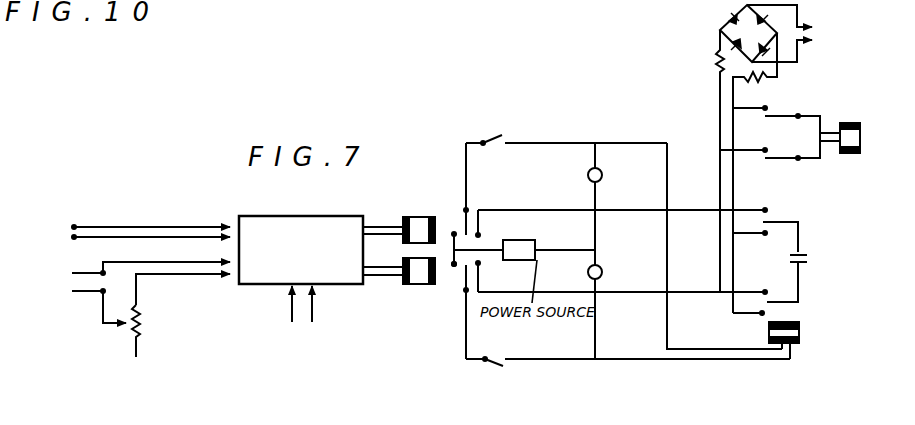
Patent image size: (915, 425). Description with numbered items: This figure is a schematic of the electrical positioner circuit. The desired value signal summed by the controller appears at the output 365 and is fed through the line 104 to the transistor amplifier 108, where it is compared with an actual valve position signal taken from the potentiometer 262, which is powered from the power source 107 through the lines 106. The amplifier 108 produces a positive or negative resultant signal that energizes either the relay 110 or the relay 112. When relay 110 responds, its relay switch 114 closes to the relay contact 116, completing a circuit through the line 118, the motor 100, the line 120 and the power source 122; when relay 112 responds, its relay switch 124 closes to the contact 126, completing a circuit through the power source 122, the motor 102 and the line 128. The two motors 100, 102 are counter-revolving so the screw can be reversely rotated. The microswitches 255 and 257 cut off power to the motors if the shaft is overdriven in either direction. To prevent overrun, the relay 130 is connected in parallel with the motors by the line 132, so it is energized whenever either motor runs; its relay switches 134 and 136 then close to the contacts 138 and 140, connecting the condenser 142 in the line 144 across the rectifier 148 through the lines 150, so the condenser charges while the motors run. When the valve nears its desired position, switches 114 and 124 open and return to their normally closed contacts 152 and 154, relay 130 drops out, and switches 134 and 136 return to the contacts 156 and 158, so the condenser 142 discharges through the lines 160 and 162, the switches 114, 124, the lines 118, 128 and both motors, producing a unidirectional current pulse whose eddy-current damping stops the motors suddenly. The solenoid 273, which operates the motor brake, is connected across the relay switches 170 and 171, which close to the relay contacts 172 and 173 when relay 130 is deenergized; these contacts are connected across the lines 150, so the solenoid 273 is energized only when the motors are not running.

The output 365 is at (75, 224).
The line 104 is at (137, 225).
The power source 107 is at (70, 283).
The lines 106 is at (168, 277).
The potentiometer 262 is at (145, 311).
The transistor amplifier 108 is at (287, 228).
The relay 110 is at (420, 225).
The relay 112 is at (423, 276).
The relay contact 116 is at (452, 229).
The relay switch 114 is at (468, 209).
The microswitch 255 is at (498, 134).
The line 118 is at (562, 143).
The line 132 is at (651, 143).
The motor 100 is at (588, 172).
The line 160 is at (623, 209).
The contact 152 is at (482, 233).
The power source 122 is at (520, 248).
The line 120 is at (598, 233).
The contact 154 is at (483, 265).
The motor 102 is at (588, 270).
The relay switch 124 is at (463, 277).
The contact 126 is at (452, 268).
The microswitch 257 is at (492, 366).
The line 128 is at (570, 359).
The line 162 is at (622, 293).
The rectifier 148 is at (726, 13).
The lines 150 is at (736, 93).
The relay contact 172 is at (768, 106).
The relay switch 170 is at (786, 116).
The relay contact 173 is at (763, 147).
The relay switch 171 is at (783, 157).
The solenoid 273 is at (863, 132).
The contact 158 is at (763, 200).
The relay switch 136 is at (784, 218).
The line 144 is at (803, 233).
The contact 140 is at (760, 240).
The condenser 142 is at (812, 260).
The contact 156 is at (762, 288).
The relay switch 134 is at (782, 301).
The contact 138 is at (757, 317).
The relay 130 is at (790, 333).